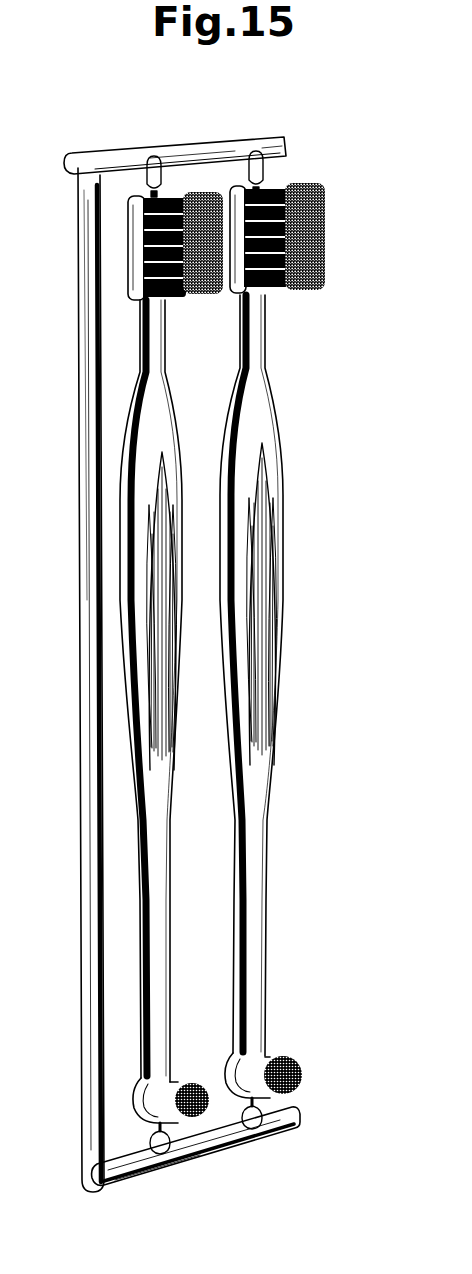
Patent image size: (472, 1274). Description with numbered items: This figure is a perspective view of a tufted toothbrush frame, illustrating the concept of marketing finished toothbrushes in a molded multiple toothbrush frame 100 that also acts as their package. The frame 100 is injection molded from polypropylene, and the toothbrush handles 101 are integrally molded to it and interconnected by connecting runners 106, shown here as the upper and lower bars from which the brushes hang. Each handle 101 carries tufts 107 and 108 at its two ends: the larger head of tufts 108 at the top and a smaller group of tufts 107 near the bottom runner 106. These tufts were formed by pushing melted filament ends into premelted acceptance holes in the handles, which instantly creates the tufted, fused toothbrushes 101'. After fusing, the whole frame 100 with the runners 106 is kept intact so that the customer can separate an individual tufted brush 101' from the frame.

The toothbrush handle frame 100 is at (94, 143).
The connecting runners 106 is at (210, 143).
The toothbrush handle 101 is at (166, 691).
The tufted toothbrush 101' is at (271, 675).
The tufts 108 is at (325, 220).
The tufts 107 is at (200, 1082).